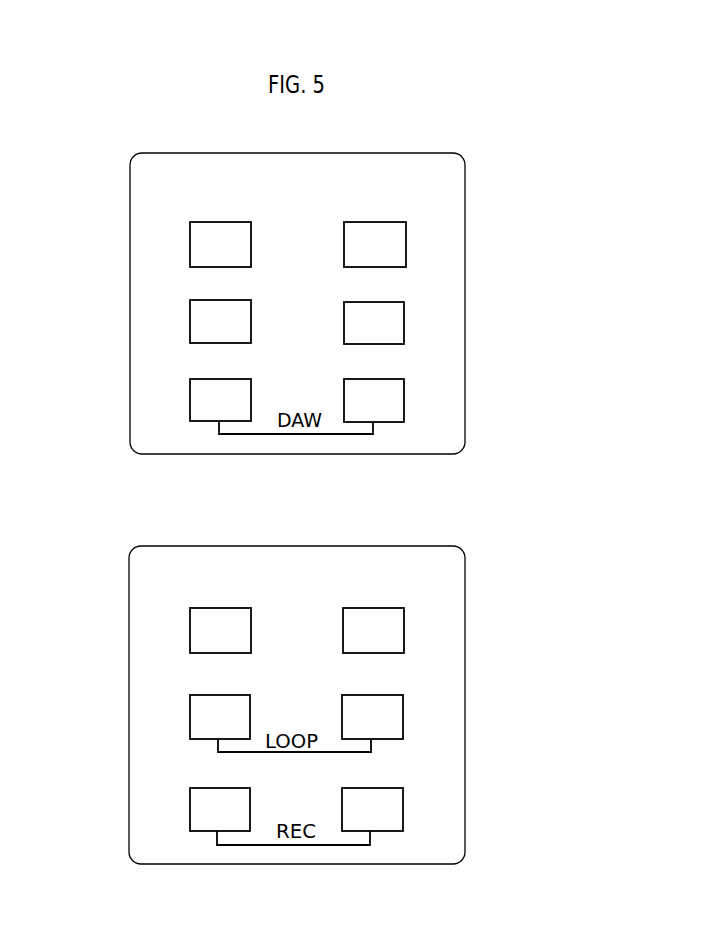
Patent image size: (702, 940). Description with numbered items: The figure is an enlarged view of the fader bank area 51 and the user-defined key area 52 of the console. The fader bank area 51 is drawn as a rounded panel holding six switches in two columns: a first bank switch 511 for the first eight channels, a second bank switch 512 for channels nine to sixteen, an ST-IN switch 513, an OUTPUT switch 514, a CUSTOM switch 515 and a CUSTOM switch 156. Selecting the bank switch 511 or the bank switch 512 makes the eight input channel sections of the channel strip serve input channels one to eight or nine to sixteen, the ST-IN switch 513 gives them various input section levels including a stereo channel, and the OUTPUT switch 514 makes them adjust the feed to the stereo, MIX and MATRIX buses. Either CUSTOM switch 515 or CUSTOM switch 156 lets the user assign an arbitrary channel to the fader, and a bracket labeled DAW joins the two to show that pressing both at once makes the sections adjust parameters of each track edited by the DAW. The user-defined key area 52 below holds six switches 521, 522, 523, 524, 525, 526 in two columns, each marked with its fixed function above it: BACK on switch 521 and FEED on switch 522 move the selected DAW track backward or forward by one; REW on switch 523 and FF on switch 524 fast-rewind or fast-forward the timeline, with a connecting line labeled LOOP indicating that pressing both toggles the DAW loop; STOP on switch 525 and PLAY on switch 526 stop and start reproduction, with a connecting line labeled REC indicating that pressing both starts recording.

The fader bank area 51 is at (455, 210).
The 1-8 bank switch 511 is at (190, 243).
The 9-16 bank switch 512 is at (406, 258).
The ST-IN switch 513 is at (190, 320).
The OUTPUT switch 514 is at (404, 321).
The fader bank key CUSTOM1 515 is at (190, 398).
The CUSTOM switch 156 is at (404, 404).
The user-defined key area 52 is at (453, 583).
The switch 521 is at (190, 632).
The switch 522 is at (404, 647).
The switch 523 is at (190, 706).
The switch 524 is at (403, 708).
The switch 525 is at (190, 790).
The switch 526 is at (403, 792).